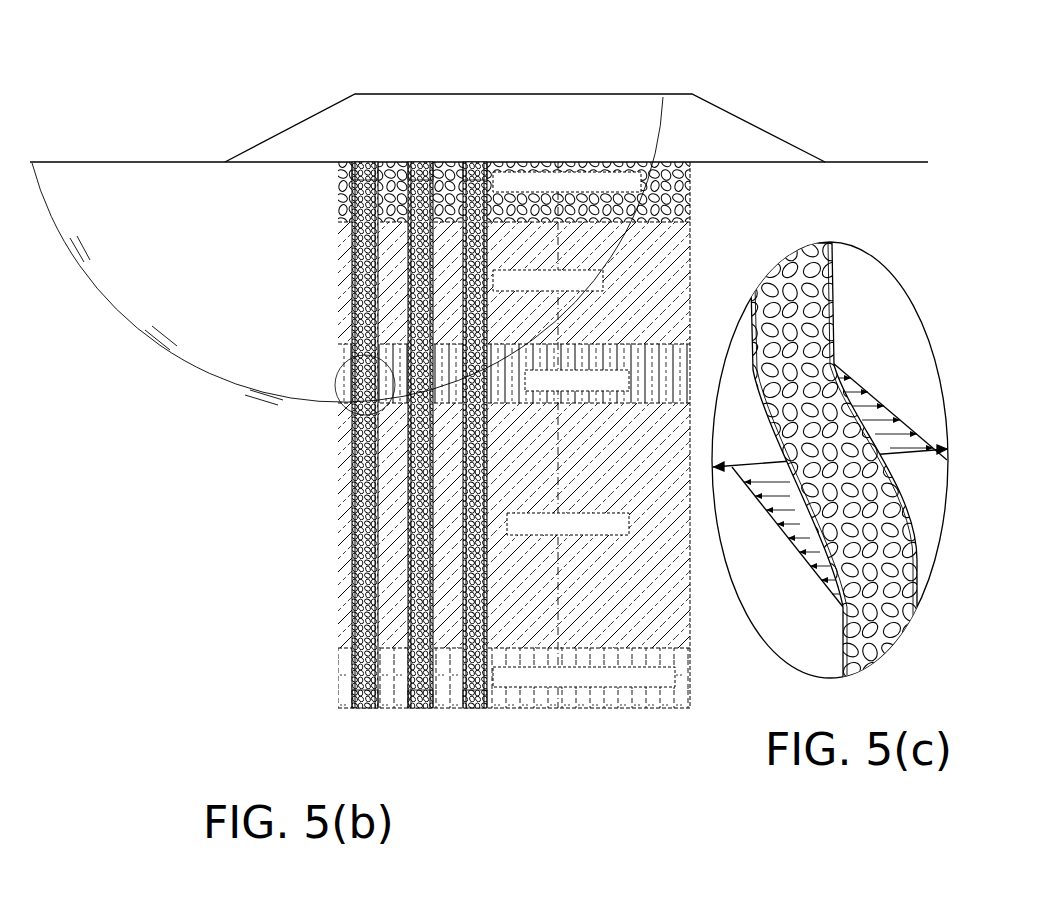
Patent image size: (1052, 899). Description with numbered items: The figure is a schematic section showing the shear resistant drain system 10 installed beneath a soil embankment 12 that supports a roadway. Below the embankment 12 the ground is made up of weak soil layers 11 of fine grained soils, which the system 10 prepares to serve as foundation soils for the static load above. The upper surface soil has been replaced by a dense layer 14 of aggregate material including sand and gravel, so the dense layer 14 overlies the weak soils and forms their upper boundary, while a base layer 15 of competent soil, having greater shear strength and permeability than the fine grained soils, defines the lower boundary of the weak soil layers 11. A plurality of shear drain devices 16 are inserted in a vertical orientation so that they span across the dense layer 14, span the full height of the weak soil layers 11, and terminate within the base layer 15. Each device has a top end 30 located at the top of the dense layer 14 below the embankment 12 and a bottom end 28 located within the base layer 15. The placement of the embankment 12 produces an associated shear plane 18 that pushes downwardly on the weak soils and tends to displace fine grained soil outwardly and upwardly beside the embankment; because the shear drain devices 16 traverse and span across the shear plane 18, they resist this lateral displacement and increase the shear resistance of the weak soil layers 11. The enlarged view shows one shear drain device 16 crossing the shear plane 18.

In FIG. 5B, the shear resistant drain system 10 is at (416, 128).
In FIG. 5B, the weak soil layers 11 is at (290, 648).
In FIG. 5B, the embankment 12 is at (312, 140).
In FIG. 5B, the dense layer 14 is at (688, 191).
In FIG. 5B, the base layer 15 is at (338, 688).
In FIG. 5B, the shear drain devices 16 is at (474, 512).
In FIG. 5C, the shear drain devices 16 is at (845, 327).
In FIG. 5B, the shear plane 18 is at (243, 399).
In FIG. 5C, the shear plane 18 is at (914, 458).
In FIG. 5B, the bottom end 28 is at (365, 710).
In FIG. 5B, the top end 30 is at (470, 168).